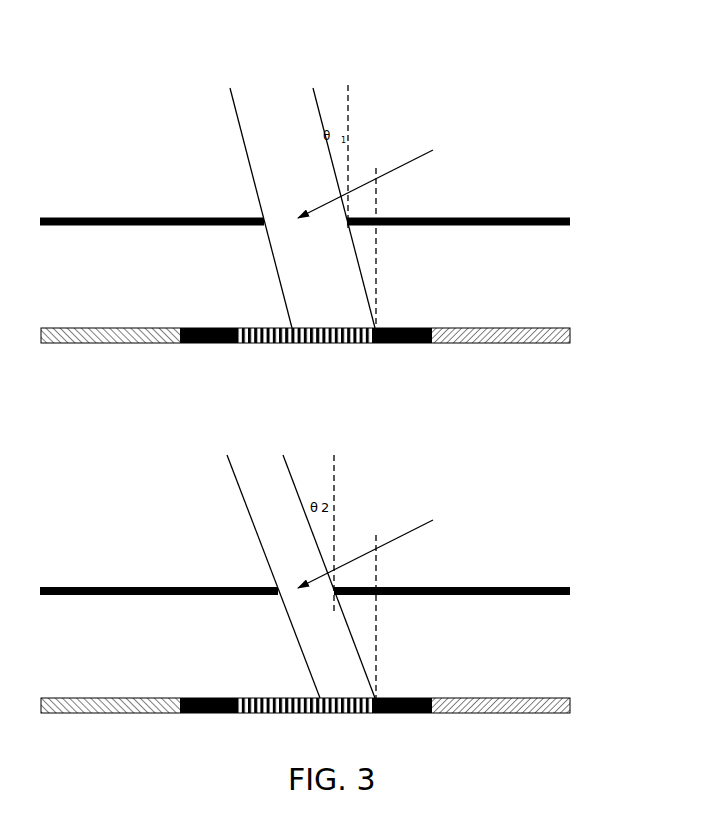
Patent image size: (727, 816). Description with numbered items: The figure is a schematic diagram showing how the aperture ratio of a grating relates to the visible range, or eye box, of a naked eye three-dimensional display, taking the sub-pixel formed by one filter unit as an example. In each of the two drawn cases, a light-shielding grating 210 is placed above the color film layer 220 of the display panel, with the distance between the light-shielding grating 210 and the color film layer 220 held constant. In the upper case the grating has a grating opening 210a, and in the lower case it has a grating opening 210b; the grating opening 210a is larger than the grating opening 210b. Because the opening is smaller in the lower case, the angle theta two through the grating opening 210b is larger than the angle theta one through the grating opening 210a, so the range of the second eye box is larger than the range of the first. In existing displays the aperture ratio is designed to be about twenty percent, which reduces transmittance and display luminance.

The light-shielding grating 210 is at (332, 383).
The color film layer 220 is at (333, 500).
The grating opening 210a is at (490, 150).
The grating opening 210b is at (490, 520).